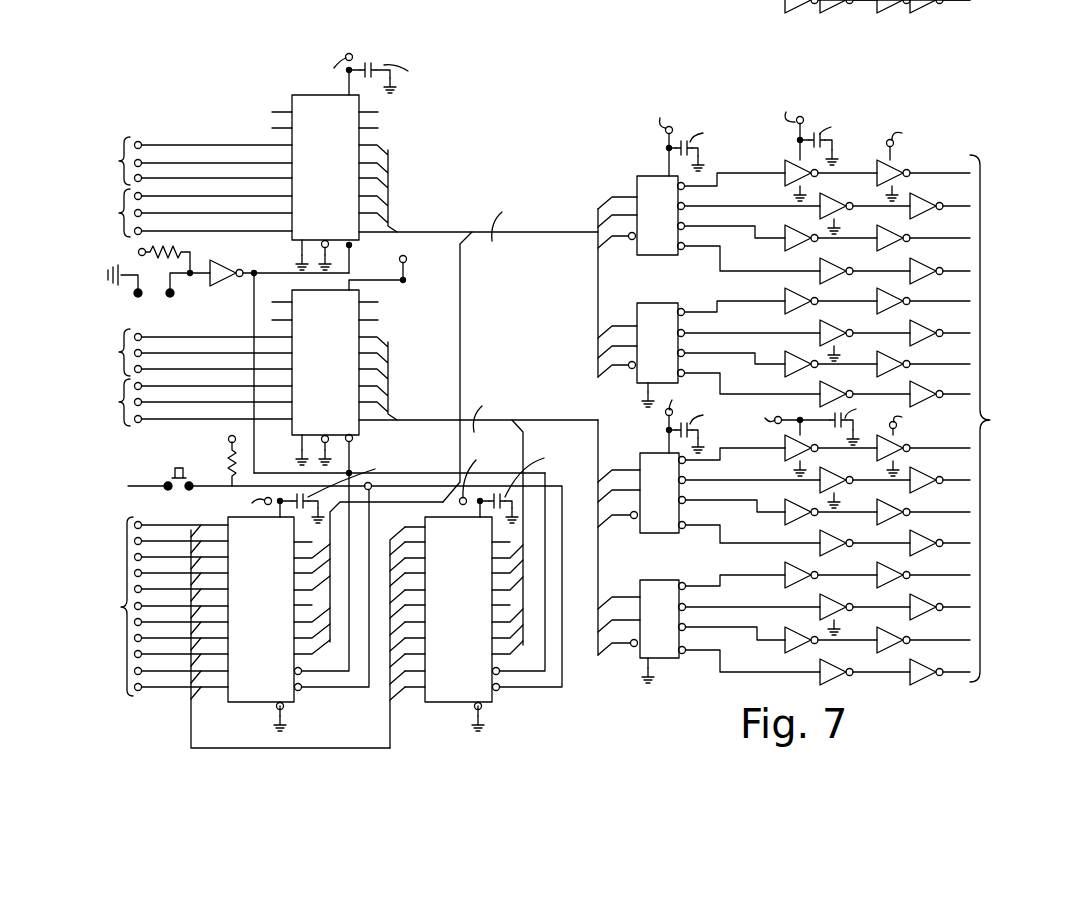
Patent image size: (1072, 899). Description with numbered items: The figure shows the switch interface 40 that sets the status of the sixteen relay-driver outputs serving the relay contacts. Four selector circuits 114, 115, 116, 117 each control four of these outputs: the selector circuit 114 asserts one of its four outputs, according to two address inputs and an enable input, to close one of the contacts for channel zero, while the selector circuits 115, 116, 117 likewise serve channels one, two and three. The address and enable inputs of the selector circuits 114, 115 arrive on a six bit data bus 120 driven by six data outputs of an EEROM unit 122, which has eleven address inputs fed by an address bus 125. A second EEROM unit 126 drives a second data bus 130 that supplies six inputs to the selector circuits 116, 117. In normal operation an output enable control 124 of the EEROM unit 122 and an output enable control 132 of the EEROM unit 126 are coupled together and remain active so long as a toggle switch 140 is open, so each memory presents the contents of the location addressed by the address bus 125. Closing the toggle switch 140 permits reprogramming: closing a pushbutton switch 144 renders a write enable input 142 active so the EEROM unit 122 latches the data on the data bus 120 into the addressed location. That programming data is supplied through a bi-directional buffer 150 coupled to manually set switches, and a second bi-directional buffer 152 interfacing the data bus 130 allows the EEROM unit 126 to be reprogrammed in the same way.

The switch interface 40 is at (537, 111).
The bi-directional buffer 150 is at (356, 140).
The second bi-directional buffer 152 is at (356, 342).
The data bus 120 is at (437, 232).
The second data bus 130 is at (525, 420).
The selector circuit 114 is at (637, 190).
The selector circuit 115 is at (638, 312).
The selector circuit 116 is at (672, 520).
The selector circuit 117 is at (650, 657).
The EEROM unit 122 is at (245, 697).
The second EEROM unit 126 is at (443, 697).
The output enable control 124 is at (325, 674).
The output enable control 132 is at (515, 674).
The write enable input 142 is at (356, 690).
The address bus 125 is at (116, 628).
The toggle switch 140 is at (124, 300).
The pushbutton switch 144 is at (158, 468).